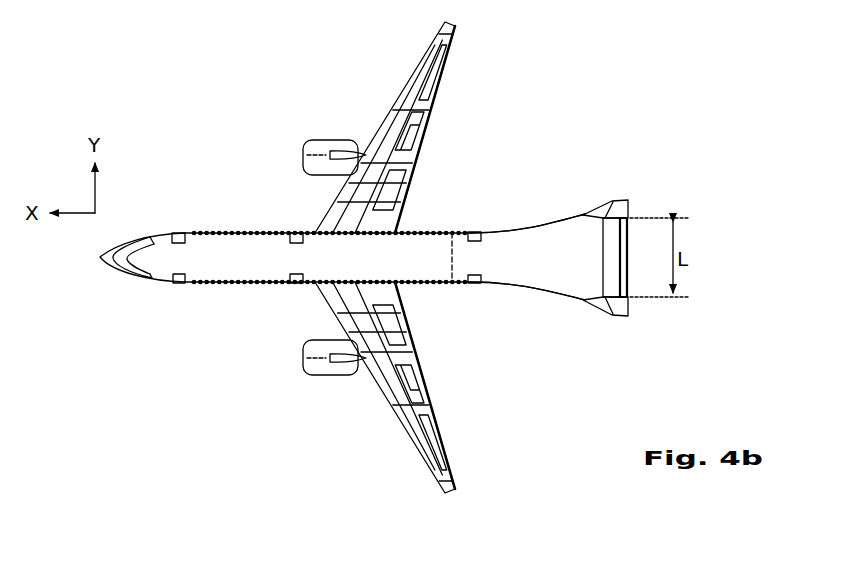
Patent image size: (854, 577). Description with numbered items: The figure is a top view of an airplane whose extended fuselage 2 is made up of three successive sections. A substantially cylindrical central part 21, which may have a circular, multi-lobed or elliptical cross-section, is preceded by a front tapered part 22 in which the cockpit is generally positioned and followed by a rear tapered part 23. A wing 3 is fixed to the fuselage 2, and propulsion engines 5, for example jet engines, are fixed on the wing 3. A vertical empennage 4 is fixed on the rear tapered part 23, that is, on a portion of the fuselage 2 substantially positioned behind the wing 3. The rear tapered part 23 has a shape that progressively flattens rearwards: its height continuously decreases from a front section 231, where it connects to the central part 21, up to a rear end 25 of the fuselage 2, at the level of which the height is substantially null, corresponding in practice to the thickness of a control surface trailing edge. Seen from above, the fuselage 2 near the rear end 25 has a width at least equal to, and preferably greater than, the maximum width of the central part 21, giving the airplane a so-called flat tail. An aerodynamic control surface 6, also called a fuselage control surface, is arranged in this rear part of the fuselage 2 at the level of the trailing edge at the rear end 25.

The extended fuselage 2 is at (216, 216).
The central part 21 is at (255, 268).
The front tapered part 22 is at (163, 265).
The rear tapered part 23 is at (550, 273).
The front section 231 is at (452, 250).
The wing 3 is at (409, 72).
The vertical empennage 4 is at (603, 213).
The propulsion engines 5 is at (328, 139).
The aerodynamic control surface 6 is at (610, 237).
The rear end 25 is at (626, 284).